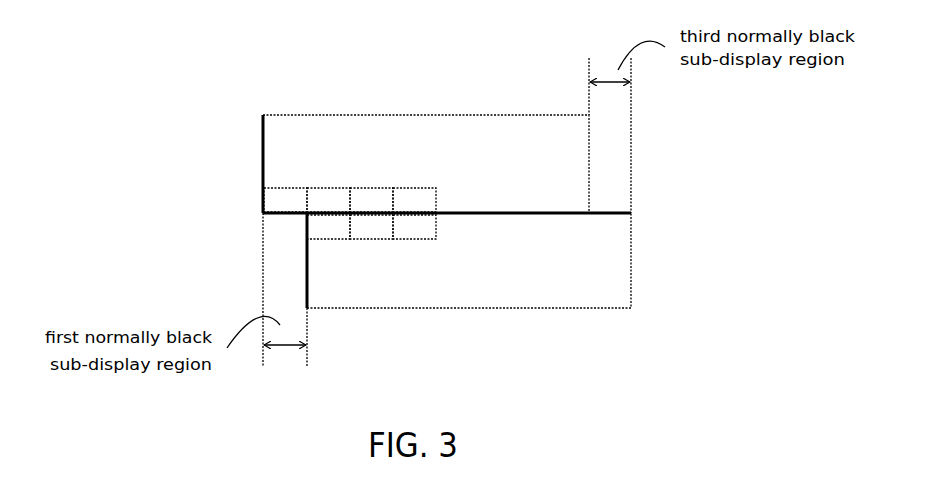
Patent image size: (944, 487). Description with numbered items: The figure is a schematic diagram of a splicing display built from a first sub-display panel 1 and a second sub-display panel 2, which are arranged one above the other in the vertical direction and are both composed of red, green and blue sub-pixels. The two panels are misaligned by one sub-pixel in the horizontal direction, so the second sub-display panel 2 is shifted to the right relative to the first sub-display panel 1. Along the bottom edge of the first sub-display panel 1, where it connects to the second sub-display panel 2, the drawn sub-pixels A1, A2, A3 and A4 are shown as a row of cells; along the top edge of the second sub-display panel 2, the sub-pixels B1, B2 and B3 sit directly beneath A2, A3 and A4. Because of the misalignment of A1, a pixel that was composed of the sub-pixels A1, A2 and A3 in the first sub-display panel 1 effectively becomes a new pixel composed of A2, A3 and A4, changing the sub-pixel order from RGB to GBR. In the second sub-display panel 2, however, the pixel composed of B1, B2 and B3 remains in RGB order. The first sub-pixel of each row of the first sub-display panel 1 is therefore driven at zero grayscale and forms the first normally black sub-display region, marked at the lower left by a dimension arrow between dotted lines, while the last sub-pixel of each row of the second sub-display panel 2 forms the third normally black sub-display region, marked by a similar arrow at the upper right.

The first sub-display panel 1 is at (447, 164).
The second sub-display panel 2 is at (469, 260).
The sub-pixel A1 is at (285, 200).
The sub-pixel A2 is at (328, 200).
The sub-pixel A3 is at (371, 200).
The sub-pixel A4 is at (414, 200).
The sub-pixel B1 is at (328, 227).
The sub-pixel B2 is at (371, 227).
The sub-pixel B3 is at (414, 227).